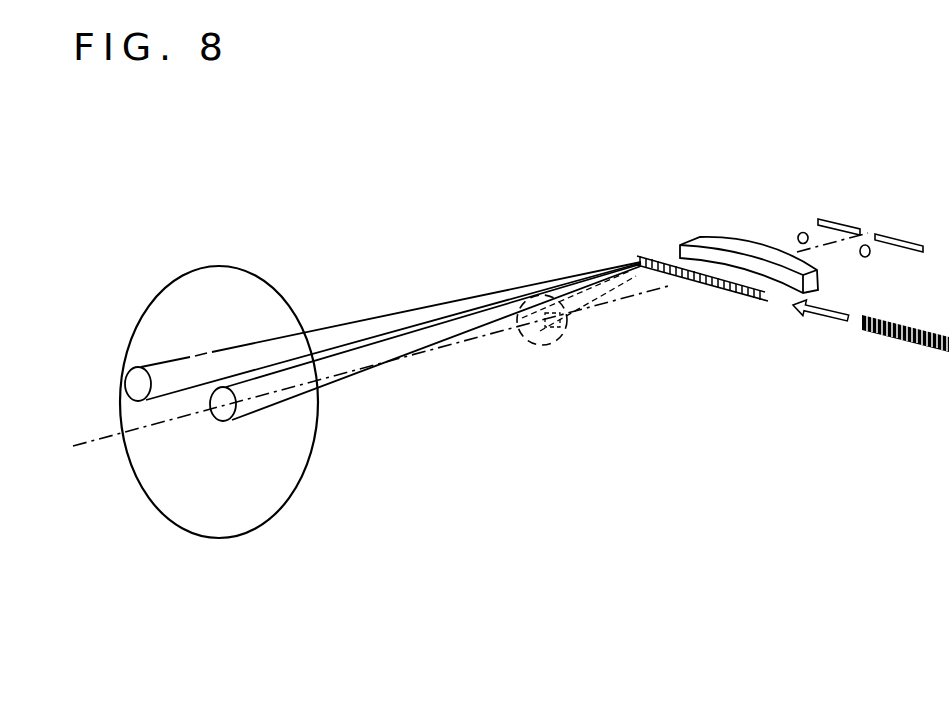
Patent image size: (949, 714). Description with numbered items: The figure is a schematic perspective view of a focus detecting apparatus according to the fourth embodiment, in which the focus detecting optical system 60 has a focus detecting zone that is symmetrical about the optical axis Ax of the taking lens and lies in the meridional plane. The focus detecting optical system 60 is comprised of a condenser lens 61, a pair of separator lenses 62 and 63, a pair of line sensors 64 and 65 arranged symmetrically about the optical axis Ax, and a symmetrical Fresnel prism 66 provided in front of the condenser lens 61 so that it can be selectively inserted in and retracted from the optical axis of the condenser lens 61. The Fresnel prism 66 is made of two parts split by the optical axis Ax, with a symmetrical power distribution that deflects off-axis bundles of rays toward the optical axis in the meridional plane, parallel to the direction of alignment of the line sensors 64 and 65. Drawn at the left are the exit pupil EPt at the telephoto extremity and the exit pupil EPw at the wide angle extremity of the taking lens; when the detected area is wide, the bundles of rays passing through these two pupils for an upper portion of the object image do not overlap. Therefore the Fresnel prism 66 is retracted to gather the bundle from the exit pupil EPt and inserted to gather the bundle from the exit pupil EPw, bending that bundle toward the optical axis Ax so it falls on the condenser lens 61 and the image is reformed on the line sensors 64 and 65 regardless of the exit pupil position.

The focus detecting optical system 60 is at (826, 356).
The condenser lens 61 is at (727, 245).
The separator lens 62 is at (799, 234).
The separator lens 63 is at (869, 256).
The line sensor 64 is at (840, 222).
The line sensor 65 is at (900, 234).
The symmetrical Fresnel prism 66 is at (752, 292).
The optical axis Ax is at (647, 298).
The exit pupil at the wide angle extremity EPw is at (545, 343).
The exit pupil at the telephoto extremity EPt is at (287, 507).